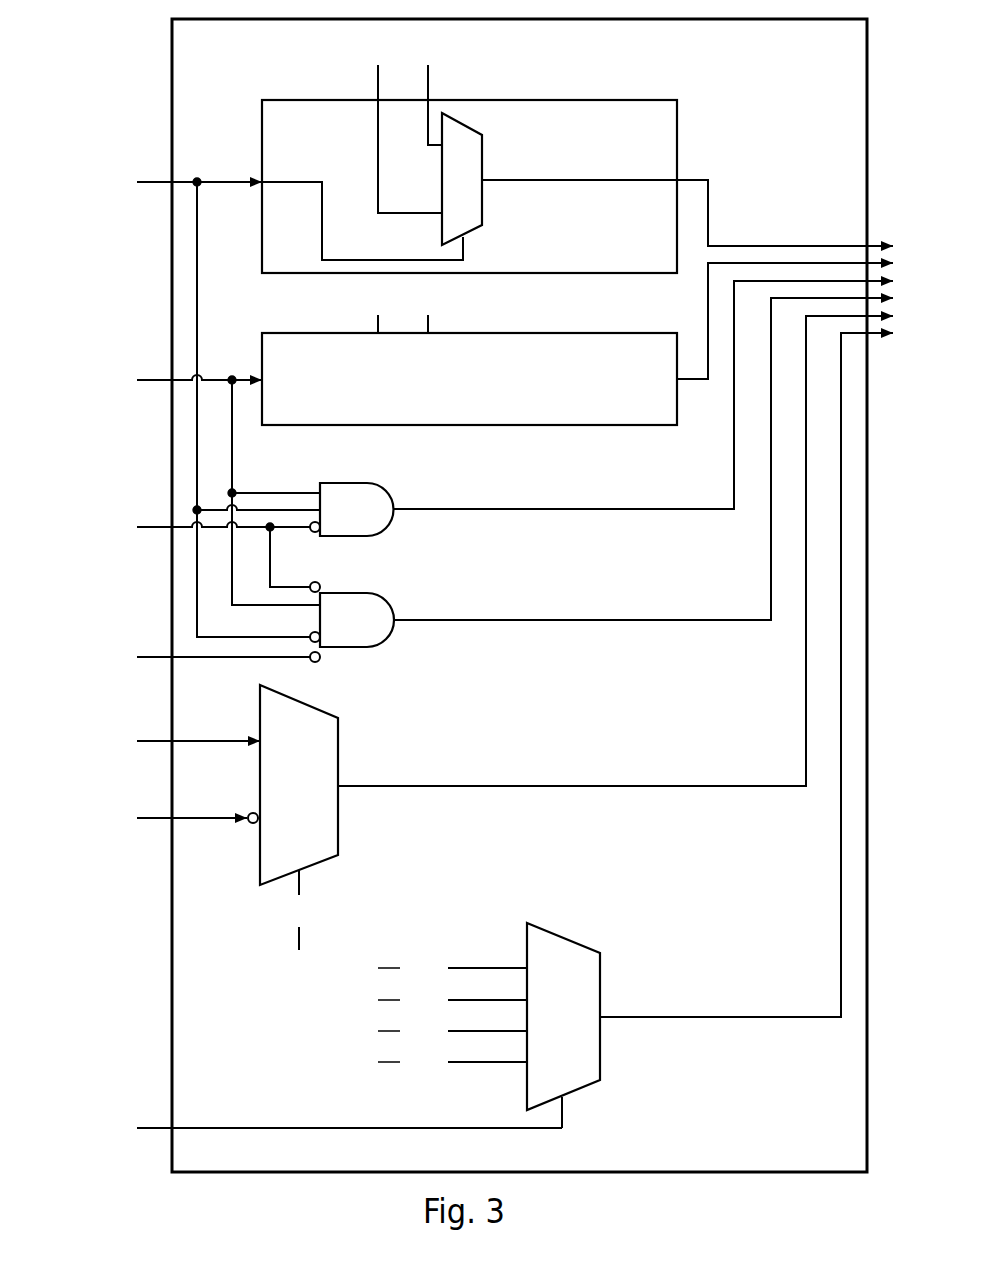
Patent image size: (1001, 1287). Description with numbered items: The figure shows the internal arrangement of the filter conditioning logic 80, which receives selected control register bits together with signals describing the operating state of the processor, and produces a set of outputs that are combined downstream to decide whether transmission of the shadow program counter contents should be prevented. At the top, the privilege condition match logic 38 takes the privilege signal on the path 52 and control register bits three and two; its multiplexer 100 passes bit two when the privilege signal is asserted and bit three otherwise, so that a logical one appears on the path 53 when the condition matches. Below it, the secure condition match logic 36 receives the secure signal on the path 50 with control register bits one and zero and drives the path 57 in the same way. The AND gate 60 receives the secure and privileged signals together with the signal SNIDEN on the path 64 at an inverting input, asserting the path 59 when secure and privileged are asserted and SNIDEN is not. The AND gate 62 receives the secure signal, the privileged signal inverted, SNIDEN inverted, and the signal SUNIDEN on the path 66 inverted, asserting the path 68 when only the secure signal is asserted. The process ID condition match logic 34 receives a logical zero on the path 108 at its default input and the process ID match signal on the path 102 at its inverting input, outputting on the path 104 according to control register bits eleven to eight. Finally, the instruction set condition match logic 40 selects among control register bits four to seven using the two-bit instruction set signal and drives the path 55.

The filter conditioning logic 80 is at (172, 68).
The path carrying privilege signal 52 is at (165, 181).
The path carrying secure signal 50 is at (165, 379).
The path carrying SNIDEN signal 64 is at (165, 526).
The path carrying SUNIDEN signal 66 is at (165, 656).
The path carrying default input value 108 is at (165, 740).
The path carrying process ID match signal 102 is at (165, 820).
The privilege condition match logic 38 is at (677, 126).
The multiplexer 100 is at (482, 158).
The path from privilege condition match logic 53 is at (630, 180).
The path from secure condition match logic 57 is at (708, 320).
The secure condition match logic 36 is at (541, 427).
The AND gate 60 is at (393, 493).
The AND gate 62 is at (393, 603).
The path from AND gate 59 is at (658, 509).
The path from AND gate 68 is at (658, 620).
The process ID condition match logic 34 is at (338, 762).
The path from process ID condition match logic 104 is at (658, 786).
The instruction set condition match logic 40 is at (600, 987).
The path from instruction set condition match logic 55 is at (738, 1017).